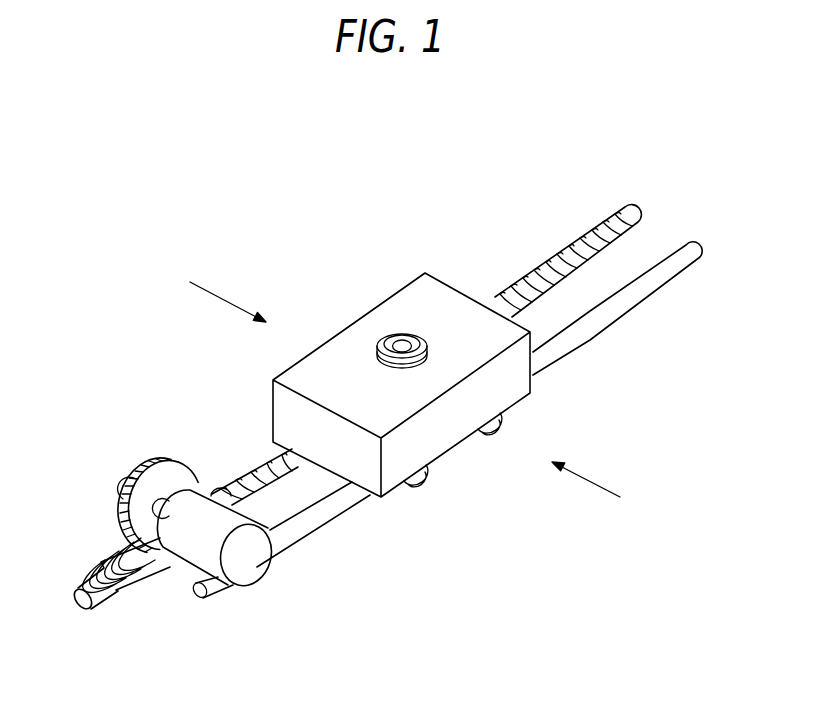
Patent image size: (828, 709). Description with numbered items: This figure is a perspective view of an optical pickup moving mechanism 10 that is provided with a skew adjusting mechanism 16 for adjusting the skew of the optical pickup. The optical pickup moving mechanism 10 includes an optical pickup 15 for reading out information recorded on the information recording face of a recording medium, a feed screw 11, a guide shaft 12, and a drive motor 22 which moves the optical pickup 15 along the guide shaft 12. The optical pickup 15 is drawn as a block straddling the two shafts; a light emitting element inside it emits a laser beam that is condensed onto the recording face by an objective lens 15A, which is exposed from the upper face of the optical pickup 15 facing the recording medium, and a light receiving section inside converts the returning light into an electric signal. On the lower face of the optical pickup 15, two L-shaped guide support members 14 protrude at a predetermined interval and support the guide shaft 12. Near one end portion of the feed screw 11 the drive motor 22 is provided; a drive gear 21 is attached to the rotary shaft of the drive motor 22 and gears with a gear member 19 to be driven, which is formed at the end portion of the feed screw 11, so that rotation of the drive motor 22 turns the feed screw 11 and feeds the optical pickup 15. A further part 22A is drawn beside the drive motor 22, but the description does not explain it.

The optical pickup moving mechanism 10 is at (450, 176).
The feed screw 11 is at (583, 232).
The guide shaft 12 is at (648, 296).
The L-shaped guide support members 14 is at (490, 433).
The optical pickup 15 is at (447, 296).
The objective lens 15A is at (403, 343).
The skew adjusting mechanism 16 is at (395, 255).
The gear member to be driven 19 is at (145, 583).
The drive gear 21 is at (170, 462).
The drive motor 22 is at (248, 573).
The pinion 22A is at (125, 485).